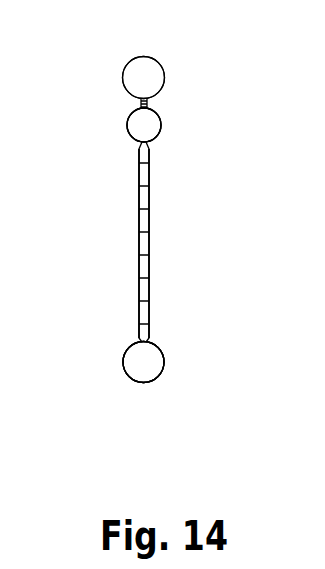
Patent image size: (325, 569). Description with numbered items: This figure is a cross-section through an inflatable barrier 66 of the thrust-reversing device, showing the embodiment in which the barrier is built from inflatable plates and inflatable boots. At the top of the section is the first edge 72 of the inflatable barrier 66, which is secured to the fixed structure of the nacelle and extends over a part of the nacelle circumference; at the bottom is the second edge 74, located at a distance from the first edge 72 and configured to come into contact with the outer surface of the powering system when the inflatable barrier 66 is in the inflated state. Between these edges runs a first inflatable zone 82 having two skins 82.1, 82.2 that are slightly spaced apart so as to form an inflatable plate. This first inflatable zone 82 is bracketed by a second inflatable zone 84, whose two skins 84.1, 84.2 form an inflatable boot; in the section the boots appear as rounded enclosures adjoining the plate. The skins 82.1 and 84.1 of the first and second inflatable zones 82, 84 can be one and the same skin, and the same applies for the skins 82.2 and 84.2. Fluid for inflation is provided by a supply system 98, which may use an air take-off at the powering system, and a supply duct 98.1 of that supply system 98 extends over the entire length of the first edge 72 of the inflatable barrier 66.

The supply system 98 is at (166, 63).
The supply duct 98.1 is at (145, 70).
The first edge 72 is at (153, 103).
The second inflatable zone 84 is at (160, 138).
The skin 84.1 is at (128, 125).
The skin 84.2 is at (161, 118).
The first inflatable zone 82 is at (137, 203).
The skin 82.1 is at (140, 173).
The skin 82.2 is at (150, 195).
The inflatable barrier 66 is at (150, 245).
The second edge 74 is at (163, 378).